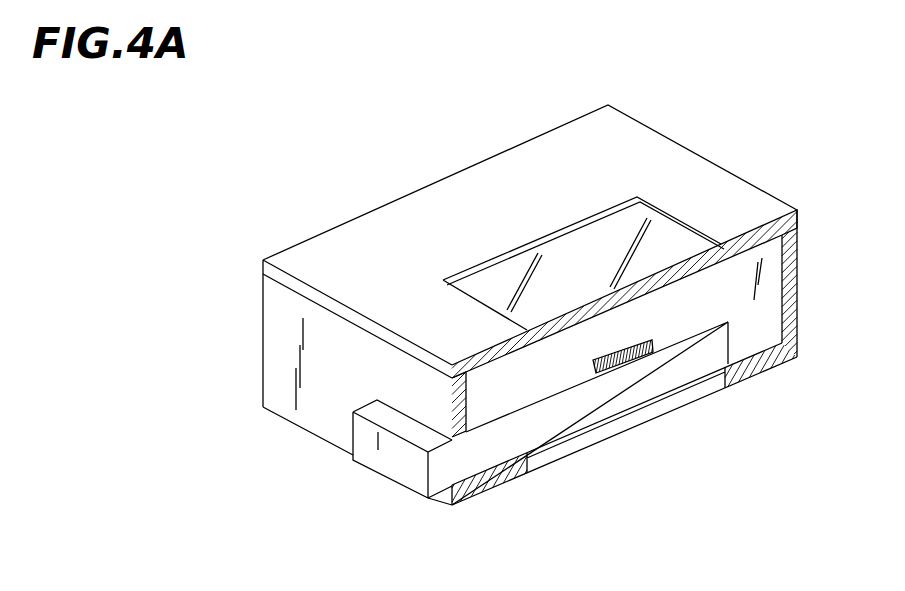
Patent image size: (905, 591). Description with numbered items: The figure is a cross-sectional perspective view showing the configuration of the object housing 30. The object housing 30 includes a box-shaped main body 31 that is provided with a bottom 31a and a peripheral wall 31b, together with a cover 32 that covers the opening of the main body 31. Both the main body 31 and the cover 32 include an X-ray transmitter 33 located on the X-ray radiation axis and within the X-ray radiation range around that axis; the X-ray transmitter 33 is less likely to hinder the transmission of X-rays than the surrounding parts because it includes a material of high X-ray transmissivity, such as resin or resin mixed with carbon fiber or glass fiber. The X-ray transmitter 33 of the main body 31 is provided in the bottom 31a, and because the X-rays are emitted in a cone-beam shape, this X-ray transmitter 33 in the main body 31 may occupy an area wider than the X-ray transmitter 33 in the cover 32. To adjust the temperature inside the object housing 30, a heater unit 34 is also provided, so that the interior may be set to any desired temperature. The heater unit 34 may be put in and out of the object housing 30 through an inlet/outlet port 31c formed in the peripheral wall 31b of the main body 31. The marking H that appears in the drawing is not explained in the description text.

The object housing 30 is at (712, 150).
The main body 31 is at (312, 413).
The bottom 31a is at (513, 480).
The peripheral wall 31b is at (798, 272).
The inlet/outlet port 31c is at (443, 503).
The cover 32 is at (345, 246).
The X-ray transmitter 33 is at (667, 247).
The heater unit 34 is at (720, 342).
The height H is at (593, 345).